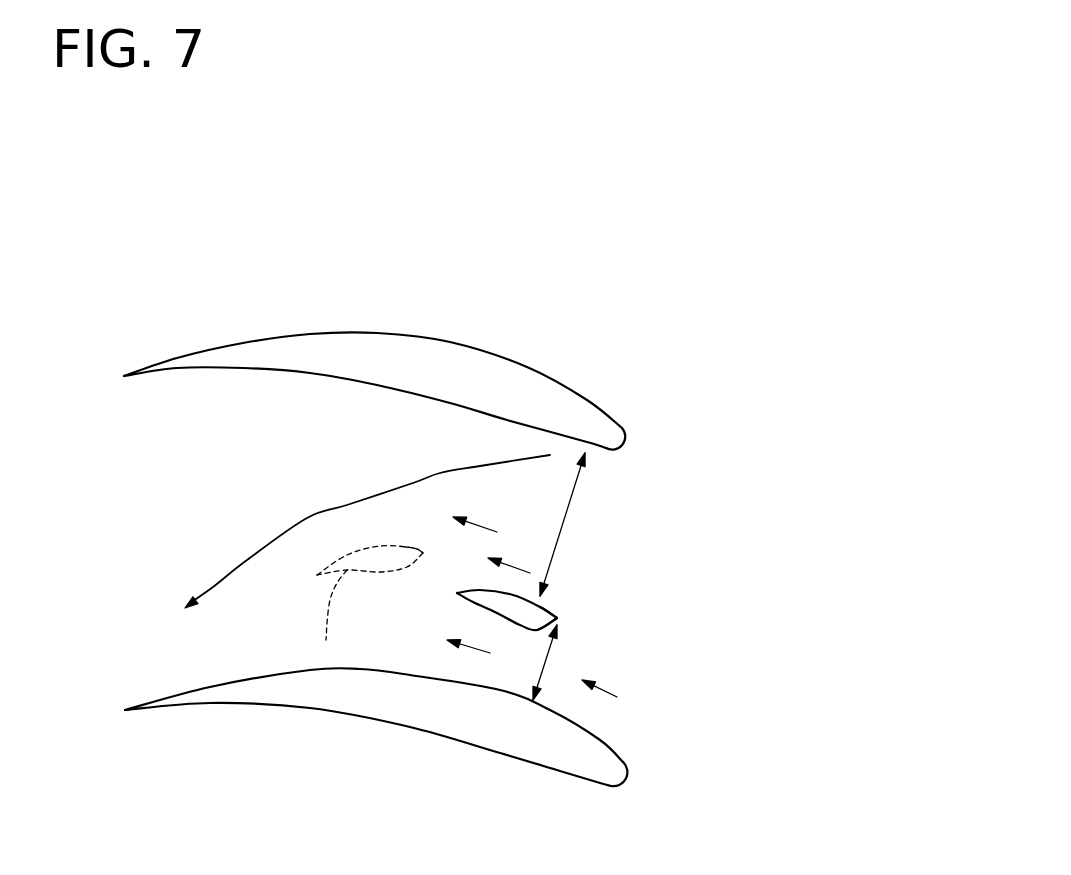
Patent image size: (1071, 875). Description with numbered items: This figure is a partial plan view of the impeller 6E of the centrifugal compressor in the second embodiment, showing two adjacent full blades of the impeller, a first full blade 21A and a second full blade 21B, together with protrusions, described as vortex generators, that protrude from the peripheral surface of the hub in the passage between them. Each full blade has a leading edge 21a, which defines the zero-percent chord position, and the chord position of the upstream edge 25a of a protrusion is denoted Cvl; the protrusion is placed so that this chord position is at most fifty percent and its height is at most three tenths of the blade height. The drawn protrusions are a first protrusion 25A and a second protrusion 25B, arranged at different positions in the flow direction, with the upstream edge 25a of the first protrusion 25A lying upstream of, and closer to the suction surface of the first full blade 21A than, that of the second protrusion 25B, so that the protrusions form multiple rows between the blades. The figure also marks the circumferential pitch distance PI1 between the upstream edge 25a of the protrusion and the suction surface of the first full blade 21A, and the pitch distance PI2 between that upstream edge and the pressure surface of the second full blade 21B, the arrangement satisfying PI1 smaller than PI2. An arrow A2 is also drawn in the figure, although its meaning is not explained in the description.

The impeller 6E is at (745, 196).
The second full blade 21B is at (528, 367).
The first full blade 21A is at (407, 730).
The leading edge 21a is at (627, 440).
The first protrusion 25A is at (512, 625).
The second protrusion 25B is at (326, 640).
The upstream edge 25a is at (427, 553).
The chord position of upstream edge Cvl is at (558, 620).
The rotation / flow direction A2 is at (308, 518).
The first pitch distance PI1 is at (550, 657).
The second pitch distance PI2 is at (565, 523).